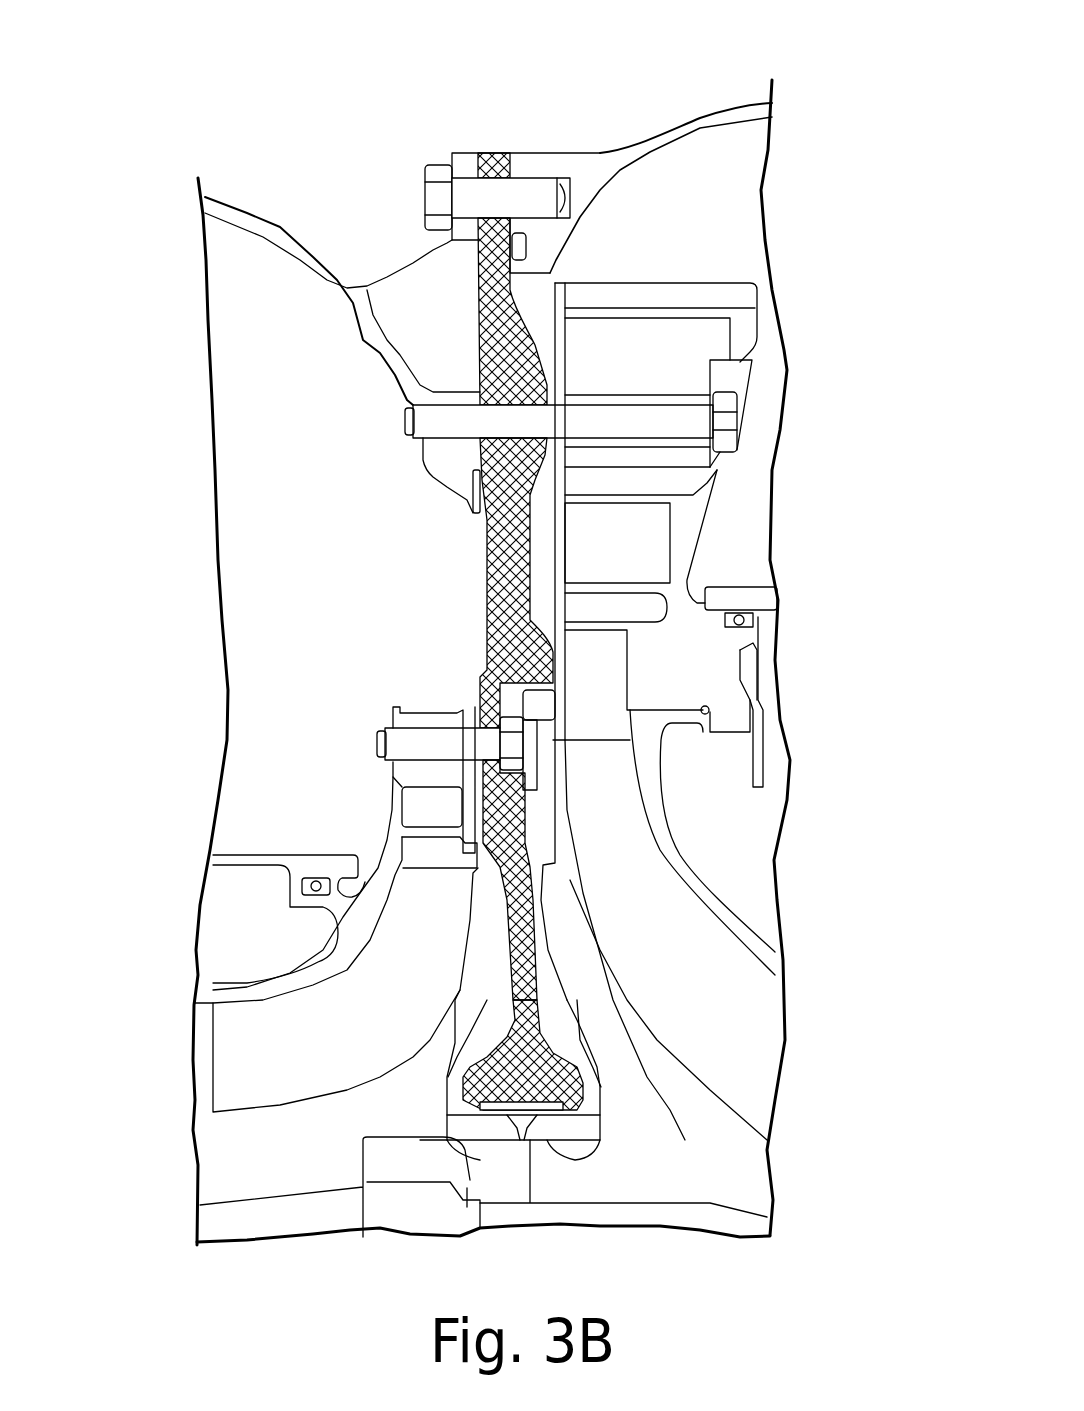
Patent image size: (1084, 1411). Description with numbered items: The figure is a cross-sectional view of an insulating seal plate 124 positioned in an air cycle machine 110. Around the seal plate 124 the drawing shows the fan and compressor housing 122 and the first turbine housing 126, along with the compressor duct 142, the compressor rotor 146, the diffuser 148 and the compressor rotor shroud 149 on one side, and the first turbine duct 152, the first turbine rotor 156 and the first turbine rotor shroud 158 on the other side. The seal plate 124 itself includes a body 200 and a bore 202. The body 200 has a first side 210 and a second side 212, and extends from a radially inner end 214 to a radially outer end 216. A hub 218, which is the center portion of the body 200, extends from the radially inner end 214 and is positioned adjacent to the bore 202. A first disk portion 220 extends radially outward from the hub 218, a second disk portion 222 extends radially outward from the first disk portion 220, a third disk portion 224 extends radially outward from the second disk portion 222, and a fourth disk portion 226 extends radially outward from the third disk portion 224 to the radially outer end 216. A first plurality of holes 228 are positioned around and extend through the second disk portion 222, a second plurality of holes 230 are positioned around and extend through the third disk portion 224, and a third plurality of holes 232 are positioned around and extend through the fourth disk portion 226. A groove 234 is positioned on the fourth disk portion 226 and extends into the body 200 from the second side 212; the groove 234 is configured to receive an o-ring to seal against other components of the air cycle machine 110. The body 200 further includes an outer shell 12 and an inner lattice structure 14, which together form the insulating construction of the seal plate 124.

The air cycle machine 110 is at (158, 101).
The fan and compressor housing 122 is at (735, 103).
The first turbine housing 126 is at (258, 228).
The compressor duct 142 is at (700, 213).
The groove 234 is at (447, 243).
The radially outer end 216 is at (491, 148).
The third plurality of holes 232 is at (508, 152).
The fourth disk portion 226 is at (480, 278).
The seal plate 124 is at (557, 340).
The first turbine duct 152 is at (275, 425).
The second plurality of holes 230 is at (480, 463).
The third disk portion 224 is at (560, 473).
The diffuser 148 is at (718, 628).
The outer shell 12 is at (488, 540).
The body 200 is at (490, 581).
The inner lattice structure 14 is at (527, 613).
The first side 210 is at (476, 645).
The second side 212 is at (556, 665).
The first plurality of holes 228 is at (477, 772).
The second disk portion 222 is at (472, 786).
The compressor rotor shroud 149 is at (657, 833).
The first disk portion 220 is at (535, 913).
The first turbine rotor shroud 158 is at (350, 938).
The hub 218 is at (578, 1070).
The radially inner end 214 is at (474, 1119).
The bore 202 is at (576, 1111).
The first turbine rotor 156 is at (247, 1157).
The compressor rotor 146 is at (702, 1157).